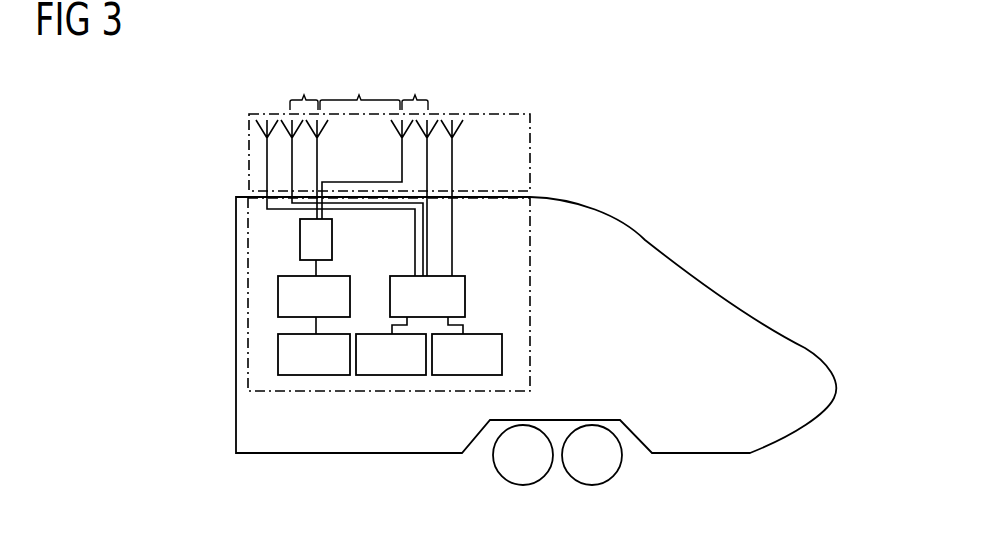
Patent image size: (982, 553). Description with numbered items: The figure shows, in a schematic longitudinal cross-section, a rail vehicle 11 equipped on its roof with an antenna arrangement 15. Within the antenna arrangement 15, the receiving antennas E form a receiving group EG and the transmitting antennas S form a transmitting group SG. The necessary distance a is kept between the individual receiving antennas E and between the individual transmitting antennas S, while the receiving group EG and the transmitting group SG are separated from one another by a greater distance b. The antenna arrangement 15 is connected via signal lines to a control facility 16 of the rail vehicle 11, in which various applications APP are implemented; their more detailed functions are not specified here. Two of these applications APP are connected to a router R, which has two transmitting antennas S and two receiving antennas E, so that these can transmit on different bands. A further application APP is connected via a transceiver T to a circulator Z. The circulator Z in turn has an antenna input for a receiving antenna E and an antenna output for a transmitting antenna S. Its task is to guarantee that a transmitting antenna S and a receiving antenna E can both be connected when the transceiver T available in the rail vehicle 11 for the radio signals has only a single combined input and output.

The rail vehicle 11 is at (708, 293).
The antenna arrangement 15 is at (530, 152).
The control facility 16 is at (530, 357).
The receiving group EG is at (270, 100).
The transmitting group SG is at (443, 100).
The receiving antenna E is at (258, 130).
The transmitting antenna S is at (457, 130).
The distance between individual antennas a is at (359, 84).
The distance between antenna groups b is at (360, 84).
The circulator Z is at (300, 233).
The transceiver T is at (278, 297).
The router R is at (465, 297).
The application APP is at (300, 355).